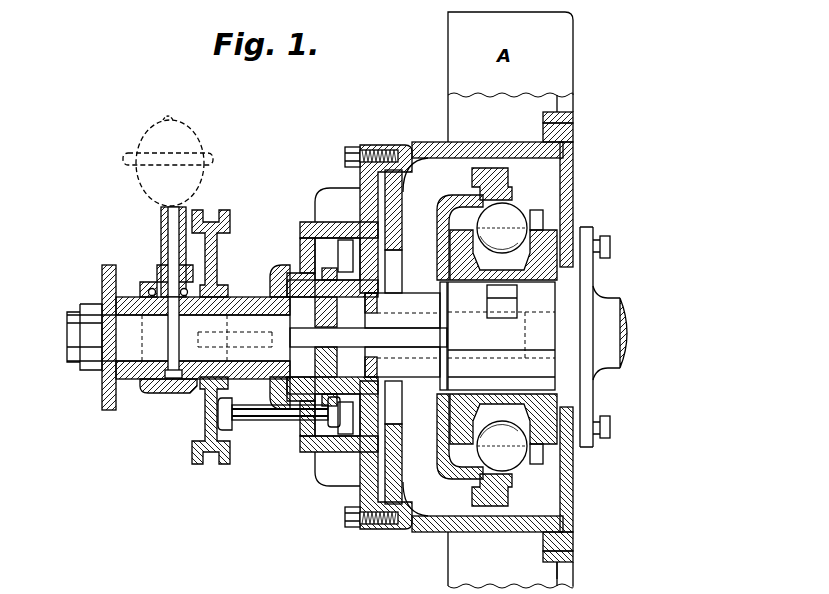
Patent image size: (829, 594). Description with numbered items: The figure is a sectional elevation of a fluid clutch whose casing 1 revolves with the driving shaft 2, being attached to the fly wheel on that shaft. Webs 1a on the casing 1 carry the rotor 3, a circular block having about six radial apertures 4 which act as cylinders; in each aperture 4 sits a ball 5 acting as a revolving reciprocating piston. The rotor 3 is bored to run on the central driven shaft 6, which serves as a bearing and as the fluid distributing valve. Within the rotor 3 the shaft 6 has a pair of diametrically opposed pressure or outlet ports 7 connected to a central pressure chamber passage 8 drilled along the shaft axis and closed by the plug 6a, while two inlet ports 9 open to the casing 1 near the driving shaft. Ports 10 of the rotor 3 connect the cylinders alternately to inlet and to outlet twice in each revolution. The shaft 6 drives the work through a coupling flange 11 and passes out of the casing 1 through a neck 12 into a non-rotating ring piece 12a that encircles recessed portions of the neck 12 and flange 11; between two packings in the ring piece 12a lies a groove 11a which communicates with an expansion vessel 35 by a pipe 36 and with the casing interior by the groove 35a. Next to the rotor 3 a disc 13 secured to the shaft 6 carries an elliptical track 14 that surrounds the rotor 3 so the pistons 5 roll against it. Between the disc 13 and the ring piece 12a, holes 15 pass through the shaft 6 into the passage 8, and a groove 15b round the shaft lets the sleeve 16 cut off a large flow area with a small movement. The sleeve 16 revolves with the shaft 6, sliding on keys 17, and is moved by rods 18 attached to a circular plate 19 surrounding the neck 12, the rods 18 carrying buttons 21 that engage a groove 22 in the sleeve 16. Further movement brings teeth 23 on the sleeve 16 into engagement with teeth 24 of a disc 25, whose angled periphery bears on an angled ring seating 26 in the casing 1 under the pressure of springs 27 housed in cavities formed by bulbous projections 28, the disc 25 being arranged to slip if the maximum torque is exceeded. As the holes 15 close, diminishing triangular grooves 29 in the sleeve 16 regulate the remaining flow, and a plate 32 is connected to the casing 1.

The casing 1 is at (574, 159).
The webs 1a is at (547, 222).
The driving shaft 2 is at (498, 142).
The rotor 3 is at (556, 280).
The radial apertures 4 is at (553, 250).
The ball 5 is at (513, 214).
The central shaft 6 is at (546, 338).
The plug 6a is at (548, 348).
The pressure or outlet ports 7 is at (501, 371).
The central pressure chamber passage 8 is at (465, 370).
The inlet ports 9 is at (618, 398).
The ports of the rotor 10 is at (503, 323).
The coupling flange 11 is at (101, 399).
The groove 11a is at (143, 395).
The neck 12 is at (242, 296).
The ring piece 12a is at (158, 394).
The flange or disc 13 is at (447, 200).
The elliptical track 14 is at (503, 178).
The holes 15 is at (405, 336).
The groove 15b is at (441, 296).
The collar or sleeve 16 is at (285, 270).
The keys 17 is at (368, 338).
The rods 18 is at (253, 420).
The circular plate 19 is at (215, 247).
The buttons 21 is at (343, 430).
The groove 22 is at (337, 268).
The lugs or teeth 23 is at (346, 257).
The lugs or teeth 24 is at (394, 254).
The disc 25 is at (396, 457).
The angled ring seating 26 is at (416, 146).
The springs 27 is at (394, 221).
The bulbous projections 28 is at (330, 207).
The grooves 29 is at (398, 287).
The plate 32 is at (363, 528).
The expansion vessel 35 is at (193, 178).
The groove 35a is at (200, 380).
The pipe 36 is at (170, 225).